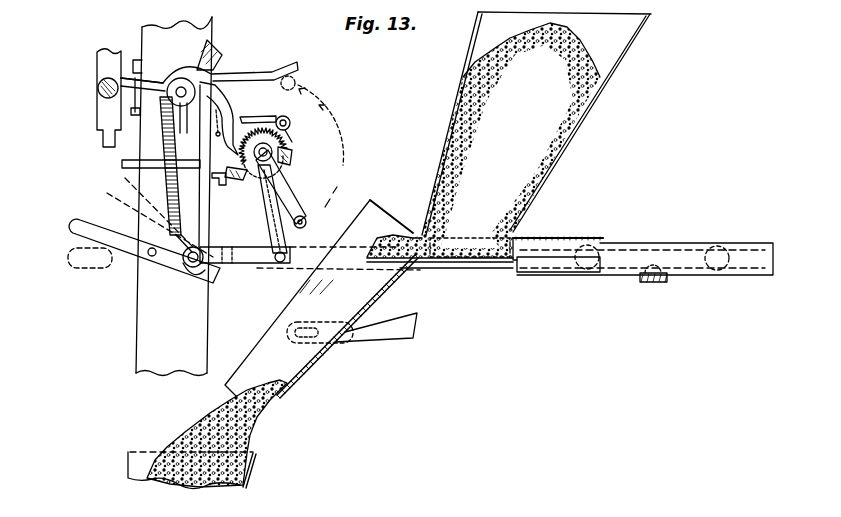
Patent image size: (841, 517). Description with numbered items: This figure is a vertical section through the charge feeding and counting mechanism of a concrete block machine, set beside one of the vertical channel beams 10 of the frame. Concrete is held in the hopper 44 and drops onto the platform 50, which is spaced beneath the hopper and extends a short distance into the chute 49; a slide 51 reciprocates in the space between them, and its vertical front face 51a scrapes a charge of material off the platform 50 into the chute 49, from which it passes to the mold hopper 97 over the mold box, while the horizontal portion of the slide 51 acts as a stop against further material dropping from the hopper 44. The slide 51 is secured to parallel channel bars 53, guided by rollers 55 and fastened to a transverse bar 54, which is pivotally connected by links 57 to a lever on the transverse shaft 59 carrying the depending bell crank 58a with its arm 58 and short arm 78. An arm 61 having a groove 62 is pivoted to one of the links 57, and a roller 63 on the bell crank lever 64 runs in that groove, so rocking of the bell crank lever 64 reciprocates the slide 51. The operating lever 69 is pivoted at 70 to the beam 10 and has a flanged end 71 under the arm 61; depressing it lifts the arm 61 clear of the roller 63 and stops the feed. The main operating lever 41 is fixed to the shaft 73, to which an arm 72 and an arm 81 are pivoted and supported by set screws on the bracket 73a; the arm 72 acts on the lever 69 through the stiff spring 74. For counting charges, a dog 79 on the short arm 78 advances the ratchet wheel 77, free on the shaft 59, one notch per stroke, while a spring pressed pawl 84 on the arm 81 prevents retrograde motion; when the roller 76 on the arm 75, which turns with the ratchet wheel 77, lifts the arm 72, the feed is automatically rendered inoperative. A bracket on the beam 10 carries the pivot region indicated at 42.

The channel beam 10 is at (145, 330).
The bracket 42 is at (128, 68).
The main operating lever 41 is at (98, 118).
The shaft 73 is at (99, 84).
The bracket 73a is at (131, 108).
The spring 74 is at (163, 138).
The arm 72 is at (288, 72).
The bell crank lever 64 is at (223, 61).
The arm 81 is at (233, 105).
The dog 79 is at (242, 118).
The transverse shaft 59 is at (284, 143).
The ratchet wheel 77 is at (282, 156).
The short arm 78 is at (290, 136).
The arm 75 is at (306, 170).
The roller 76 is at (307, 217).
The groove 62 is at (213, 238).
The bell crank 58a is at (230, 185).
The spring pressed pawl 84 is at (218, 145).
The operating lever 69 is at (82, 232).
The pivot 70 is at (150, 256).
The roller 63 is at (185, 262).
The flanged end 71 is at (220, 275).
The arm 58 is at (278, 231).
The arm 61 is at (107, 193).
The hopper 44 is at (601, 97).
The platform 50 is at (481, 263).
The link 57 is at (448, 270).
The chute 49 is at (300, 358).
The mold hopper 97 is at (253, 468).
The front face 51a is at (527, 235).
The slide 51 is at (556, 237).
The channel bar 53 is at (685, 256).
The roller 55 is at (718, 258).
The transverse bar 54 is at (653, 283).